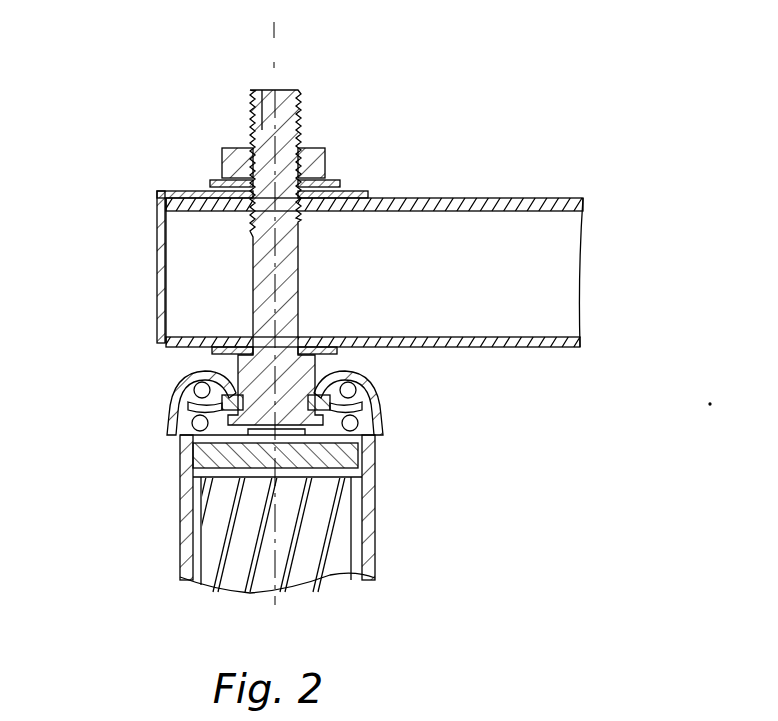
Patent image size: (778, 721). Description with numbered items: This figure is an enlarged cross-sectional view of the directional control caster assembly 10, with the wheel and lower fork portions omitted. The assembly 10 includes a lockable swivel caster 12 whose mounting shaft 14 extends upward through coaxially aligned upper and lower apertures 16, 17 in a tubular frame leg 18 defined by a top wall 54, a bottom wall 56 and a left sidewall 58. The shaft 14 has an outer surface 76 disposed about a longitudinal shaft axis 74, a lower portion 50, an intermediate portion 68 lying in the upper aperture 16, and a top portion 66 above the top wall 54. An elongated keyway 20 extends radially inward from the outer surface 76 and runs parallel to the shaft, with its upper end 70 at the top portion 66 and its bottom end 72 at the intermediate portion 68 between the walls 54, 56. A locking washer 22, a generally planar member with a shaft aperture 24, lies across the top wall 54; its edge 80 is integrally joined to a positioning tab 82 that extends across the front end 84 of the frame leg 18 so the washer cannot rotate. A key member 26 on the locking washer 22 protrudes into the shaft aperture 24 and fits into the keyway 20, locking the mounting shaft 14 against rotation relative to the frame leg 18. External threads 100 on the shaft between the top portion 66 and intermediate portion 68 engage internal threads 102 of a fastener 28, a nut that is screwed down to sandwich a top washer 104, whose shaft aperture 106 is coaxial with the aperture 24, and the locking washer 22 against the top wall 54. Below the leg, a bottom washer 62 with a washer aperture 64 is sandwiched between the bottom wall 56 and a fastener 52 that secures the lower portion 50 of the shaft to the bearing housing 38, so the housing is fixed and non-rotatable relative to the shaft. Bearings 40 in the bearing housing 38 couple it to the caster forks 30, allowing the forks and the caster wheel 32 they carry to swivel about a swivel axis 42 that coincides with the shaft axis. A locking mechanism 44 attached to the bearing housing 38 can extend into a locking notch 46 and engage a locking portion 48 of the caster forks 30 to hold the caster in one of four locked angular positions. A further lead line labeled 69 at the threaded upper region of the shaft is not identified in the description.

The directional control caster assembly 10 is at (412, 139).
The lockable swivel caster 12 is at (264, 481).
The mounting shaft 14 is at (250, 270).
The upper aperture 16 is at (300, 222).
The lower aperture 17 is at (300, 325).
The frame leg 18 is at (406, 222).
The elongated keyway 20 is at (195, 82).
The locking washer 22 is at (160, 191).
The shaft aperture 24 is at (362, 194).
The key member 26 is at (228, 165).
The fastener 28 is at (325, 163).
The caster forks 30 is at (375, 557).
The caster wheel 32 is at (350, 518).
The bearing housing 38 is at (170, 395).
The bearings 40 is at (378, 392).
The swivel axis 42 is at (276, 72).
The locking mechanism 44 is at (352, 465).
The locking notch 46 is at (372, 452).
The locking portion 48 is at (192, 460).
The lower portion 50 is at (238, 356).
The fastener 52 is at (238, 368).
The top wall 54 is at (480, 199).
The bottom wall 56 is at (425, 337).
The left sidewall 58 is at (374, 272).
The bottom washer 62 is at (212, 350).
The washer aperture 64 is at (190, 343).
The top portion 66 is at (300, 105).
The intermediate portion 68 is at (258, 212).
The thread crest 69 is at (250, 105).
The upper end 70 is at (256, 90).
The bottom end 72 is at (300, 253).
The longitudinal shaft axis 74 is at (300, 282).
The outer surface 76 is at (250, 268).
The edge 80 is at (200, 191).
The positioning tab 82 is at (160, 295).
The front end 84 is at (160, 225).
The external threads 100 is at (322, 146).
The internal threads 102 is at (248, 130).
The top washer 104 is at (220, 182).
The shaft aperture 106 is at (335, 186).